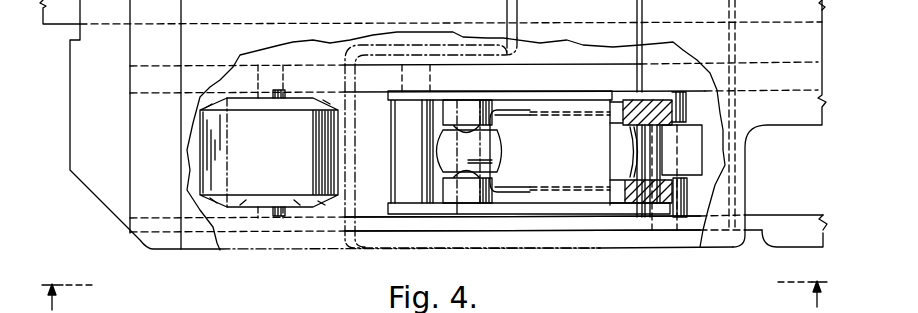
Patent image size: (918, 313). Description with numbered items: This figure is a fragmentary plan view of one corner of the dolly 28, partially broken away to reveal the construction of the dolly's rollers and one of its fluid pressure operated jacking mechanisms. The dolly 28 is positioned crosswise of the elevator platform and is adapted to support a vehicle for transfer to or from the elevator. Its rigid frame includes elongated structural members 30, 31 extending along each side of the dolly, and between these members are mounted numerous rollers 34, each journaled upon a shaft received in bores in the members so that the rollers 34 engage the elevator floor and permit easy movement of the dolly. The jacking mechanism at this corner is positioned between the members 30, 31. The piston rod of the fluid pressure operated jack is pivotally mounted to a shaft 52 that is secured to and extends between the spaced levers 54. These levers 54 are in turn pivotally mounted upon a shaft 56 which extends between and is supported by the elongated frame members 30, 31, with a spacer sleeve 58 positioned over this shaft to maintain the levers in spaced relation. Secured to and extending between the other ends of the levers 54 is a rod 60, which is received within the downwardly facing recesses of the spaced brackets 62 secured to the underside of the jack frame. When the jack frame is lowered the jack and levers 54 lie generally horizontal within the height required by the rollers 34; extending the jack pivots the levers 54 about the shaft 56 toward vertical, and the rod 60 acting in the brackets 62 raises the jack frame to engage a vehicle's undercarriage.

The dolly 28 is at (130, 240).
The elongated structural member 30 is at (338, 63).
The elongated structural member 31 is at (322, 231).
The roller 34 is at (200, 163).
The shaft 52 is at (463, 123).
The spaced lever 54 is at (523, 121).
The shaft 56 is at (430, 216).
The spacer sleeve 58 is at (393, 150).
The rod 60 is at (658, 153).
The spaced bracket 62 is at (625, 182).